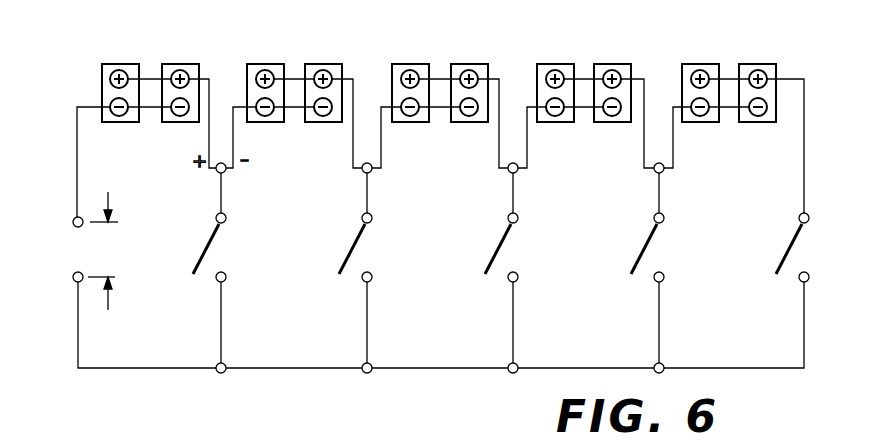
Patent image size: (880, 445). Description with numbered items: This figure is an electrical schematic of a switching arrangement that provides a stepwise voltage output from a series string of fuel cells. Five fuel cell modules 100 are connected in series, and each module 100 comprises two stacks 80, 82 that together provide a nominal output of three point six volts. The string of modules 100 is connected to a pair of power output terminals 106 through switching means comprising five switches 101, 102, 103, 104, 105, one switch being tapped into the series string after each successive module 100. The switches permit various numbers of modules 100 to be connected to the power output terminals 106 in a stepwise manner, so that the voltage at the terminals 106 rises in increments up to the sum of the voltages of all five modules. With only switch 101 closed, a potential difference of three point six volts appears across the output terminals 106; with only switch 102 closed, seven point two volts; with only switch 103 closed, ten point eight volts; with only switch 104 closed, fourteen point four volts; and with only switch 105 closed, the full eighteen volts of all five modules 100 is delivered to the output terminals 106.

The fuel cell module 100 is at (430, 91).
The stack 80 is at (129, 123).
The stack 82 is at (182, 123).
The switch 101 is at (212, 240).
The switch 102 is at (359, 240).
The switch 103 is at (505, 240).
The switch 104 is at (651, 240).
The switch 105 is at (787, 240).
The power output terminals 106 is at (96, 264).